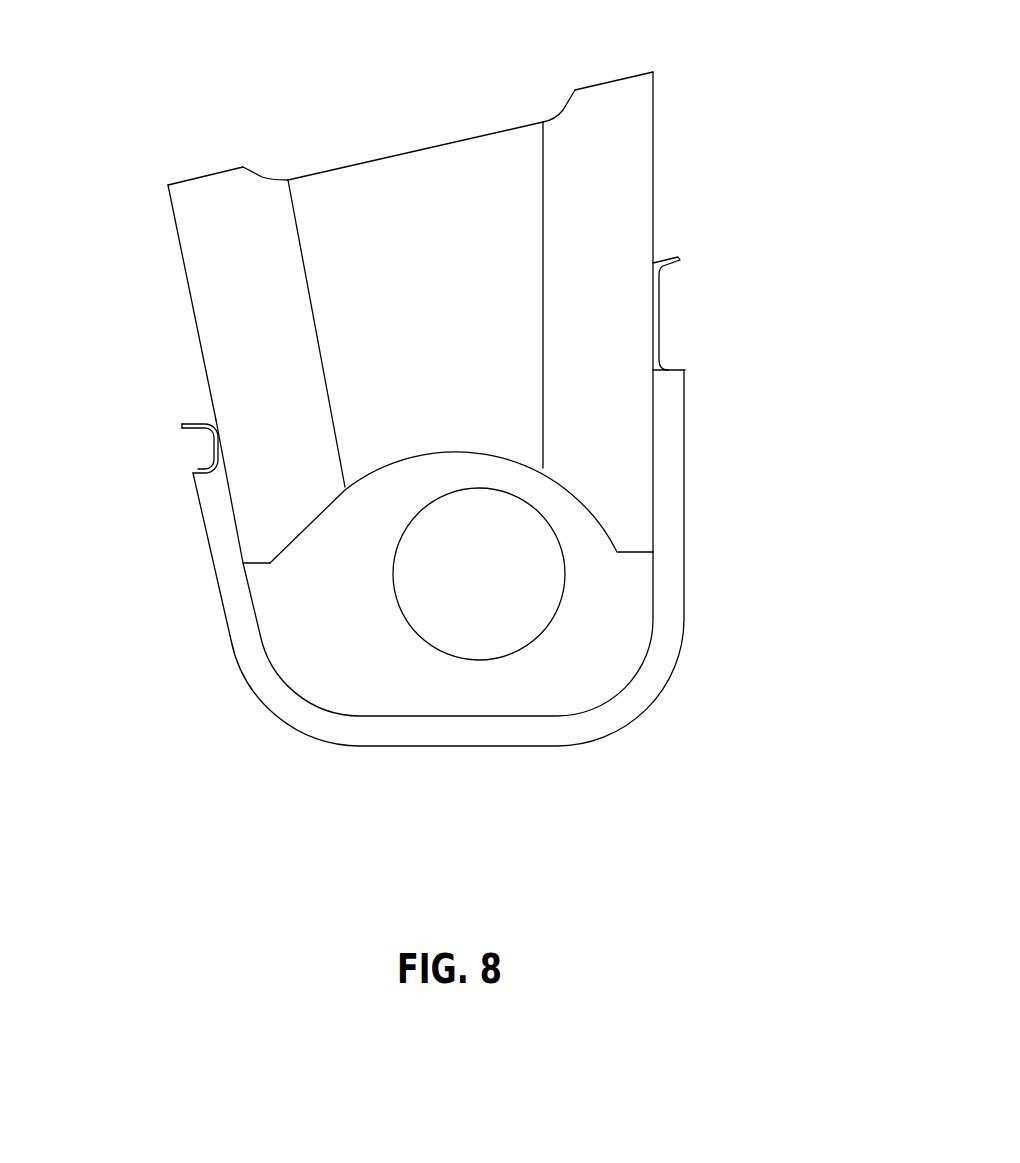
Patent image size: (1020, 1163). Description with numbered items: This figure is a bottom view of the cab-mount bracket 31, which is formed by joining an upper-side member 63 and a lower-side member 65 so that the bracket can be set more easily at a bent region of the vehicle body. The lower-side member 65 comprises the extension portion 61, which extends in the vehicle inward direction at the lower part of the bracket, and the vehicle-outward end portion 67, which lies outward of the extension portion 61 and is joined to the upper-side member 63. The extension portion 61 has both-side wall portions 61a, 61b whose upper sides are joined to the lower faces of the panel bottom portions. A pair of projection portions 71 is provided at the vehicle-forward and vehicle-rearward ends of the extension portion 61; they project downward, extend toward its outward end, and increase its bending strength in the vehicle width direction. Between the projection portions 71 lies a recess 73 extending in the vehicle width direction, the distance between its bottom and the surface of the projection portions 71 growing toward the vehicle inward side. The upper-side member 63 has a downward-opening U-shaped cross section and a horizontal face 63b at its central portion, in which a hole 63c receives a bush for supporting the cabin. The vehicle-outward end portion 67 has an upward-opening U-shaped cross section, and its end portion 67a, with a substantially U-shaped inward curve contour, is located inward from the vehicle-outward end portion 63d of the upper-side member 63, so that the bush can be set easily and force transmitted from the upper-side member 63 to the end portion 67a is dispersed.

The cab-mount bracket 31 is at (462, 382).
The extension portion 61 is at (133, 182).
The side wall portion 61a is at (197, 327).
The side wall portion 61b is at (653, 208).
The upper-side member 63 is at (498, 591).
The horizontal face 63b is at (349, 660).
The hole 63c is at (490, 658).
The vehicle-outward end portion of the upper-side member 63d is at (485, 755).
The lower-side member 65 is at (656, 410).
The vehicle-outward end portion 67 is at (133, 427).
The end portion 67a is at (268, 578).
The projection portion 71 is at (230, 192).
The recess 73 is at (417, 178).